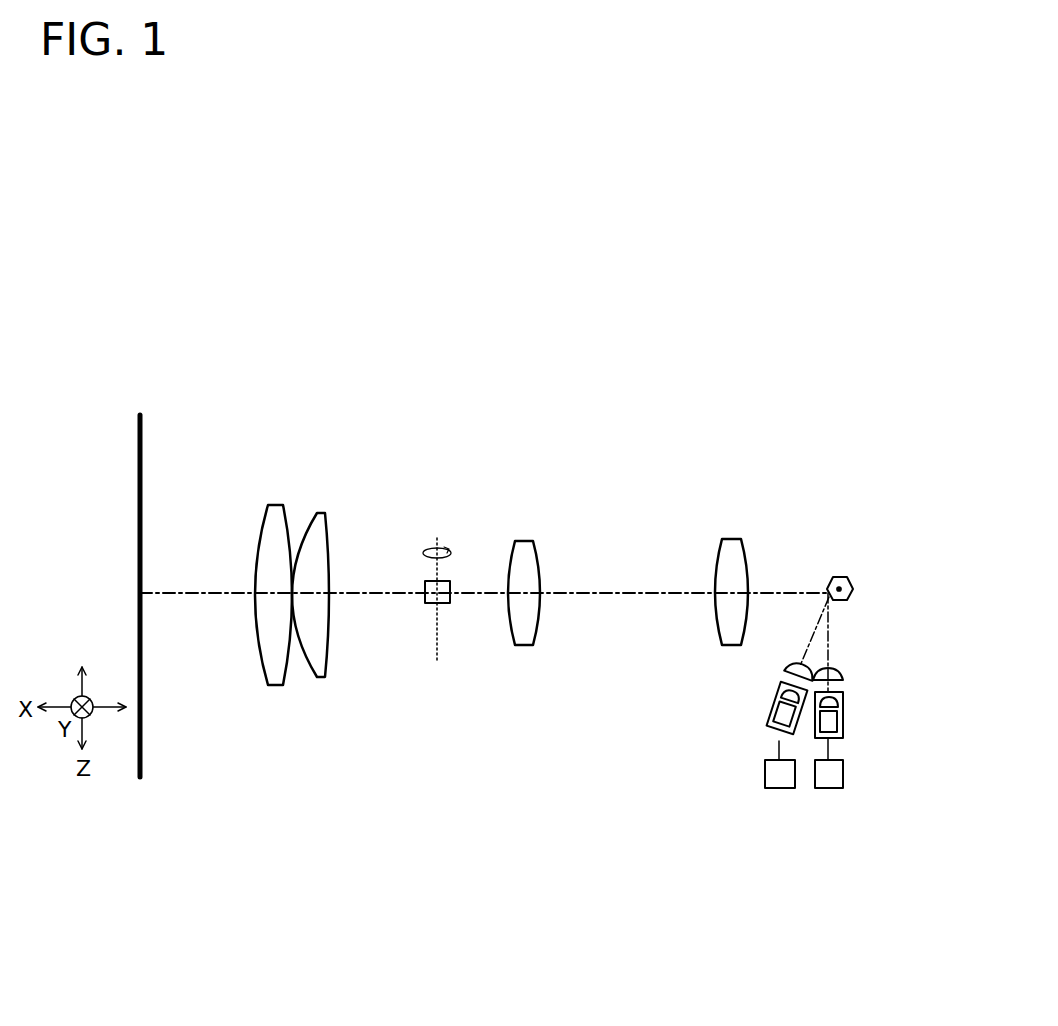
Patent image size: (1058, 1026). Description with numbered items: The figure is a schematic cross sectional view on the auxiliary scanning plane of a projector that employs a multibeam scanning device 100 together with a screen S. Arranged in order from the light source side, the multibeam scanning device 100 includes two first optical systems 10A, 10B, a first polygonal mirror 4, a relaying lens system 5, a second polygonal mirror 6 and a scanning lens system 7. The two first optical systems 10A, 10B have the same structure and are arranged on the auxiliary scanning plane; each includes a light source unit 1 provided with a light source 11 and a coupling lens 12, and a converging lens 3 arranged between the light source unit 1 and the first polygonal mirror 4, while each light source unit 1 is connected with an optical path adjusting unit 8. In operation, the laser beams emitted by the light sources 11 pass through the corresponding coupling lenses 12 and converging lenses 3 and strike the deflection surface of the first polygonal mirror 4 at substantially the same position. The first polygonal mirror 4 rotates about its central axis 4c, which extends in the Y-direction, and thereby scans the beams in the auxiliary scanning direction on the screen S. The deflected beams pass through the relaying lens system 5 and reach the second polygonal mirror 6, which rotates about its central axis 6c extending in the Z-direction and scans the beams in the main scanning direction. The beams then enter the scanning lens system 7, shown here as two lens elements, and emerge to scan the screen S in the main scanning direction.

The multibeam scanning device 100 is at (531, 418).
The screen S is at (143, 424).
The scanning lens system 7 is at (245, 503).
The second polygonal mirror 6 is at (442, 604).
The central axis of second polygonal mirror 6c is at (434, 636).
The relaying lens system 5 is at (747, 533).
The first polygonal mirror 4 is at (838, 578).
The central axis of first polygonal mirror 4c is at (843, 591).
The converging lens 3 is at (795, 663).
The light source unit 1 is at (730, 676).
The coupling lens 12 is at (790, 694).
The light source 11 is at (776, 712).
The first optical system 10A is at (760, 746).
The first optical system 10B is at (862, 751).
The optical path adjusting unit 8 is at (776, 789).